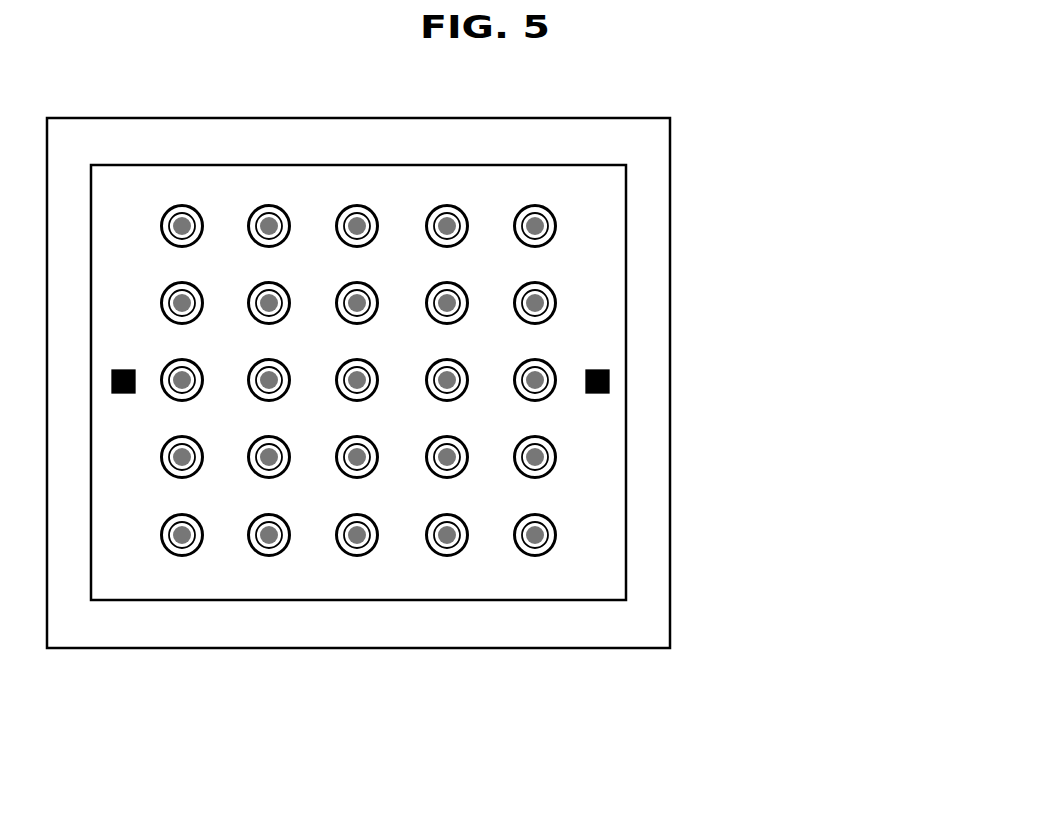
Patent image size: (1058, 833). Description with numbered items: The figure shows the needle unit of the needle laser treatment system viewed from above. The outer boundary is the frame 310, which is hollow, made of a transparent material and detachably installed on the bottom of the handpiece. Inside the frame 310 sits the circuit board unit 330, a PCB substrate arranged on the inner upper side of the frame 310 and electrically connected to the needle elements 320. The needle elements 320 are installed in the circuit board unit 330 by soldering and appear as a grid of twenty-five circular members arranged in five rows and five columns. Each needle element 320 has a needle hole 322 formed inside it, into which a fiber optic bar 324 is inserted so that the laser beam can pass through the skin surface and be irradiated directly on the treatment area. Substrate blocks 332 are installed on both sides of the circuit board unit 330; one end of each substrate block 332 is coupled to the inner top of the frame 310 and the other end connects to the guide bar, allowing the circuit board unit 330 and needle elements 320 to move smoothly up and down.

The frame 310 is at (670, 231).
The circuit board unit 330 is at (626, 300).
The substrate block 332 is at (609, 378).
The needle element 320 is at (512, 497).
The needle hole 322 is at (534, 545).
The fiber optic bar 324 is at (528, 543).